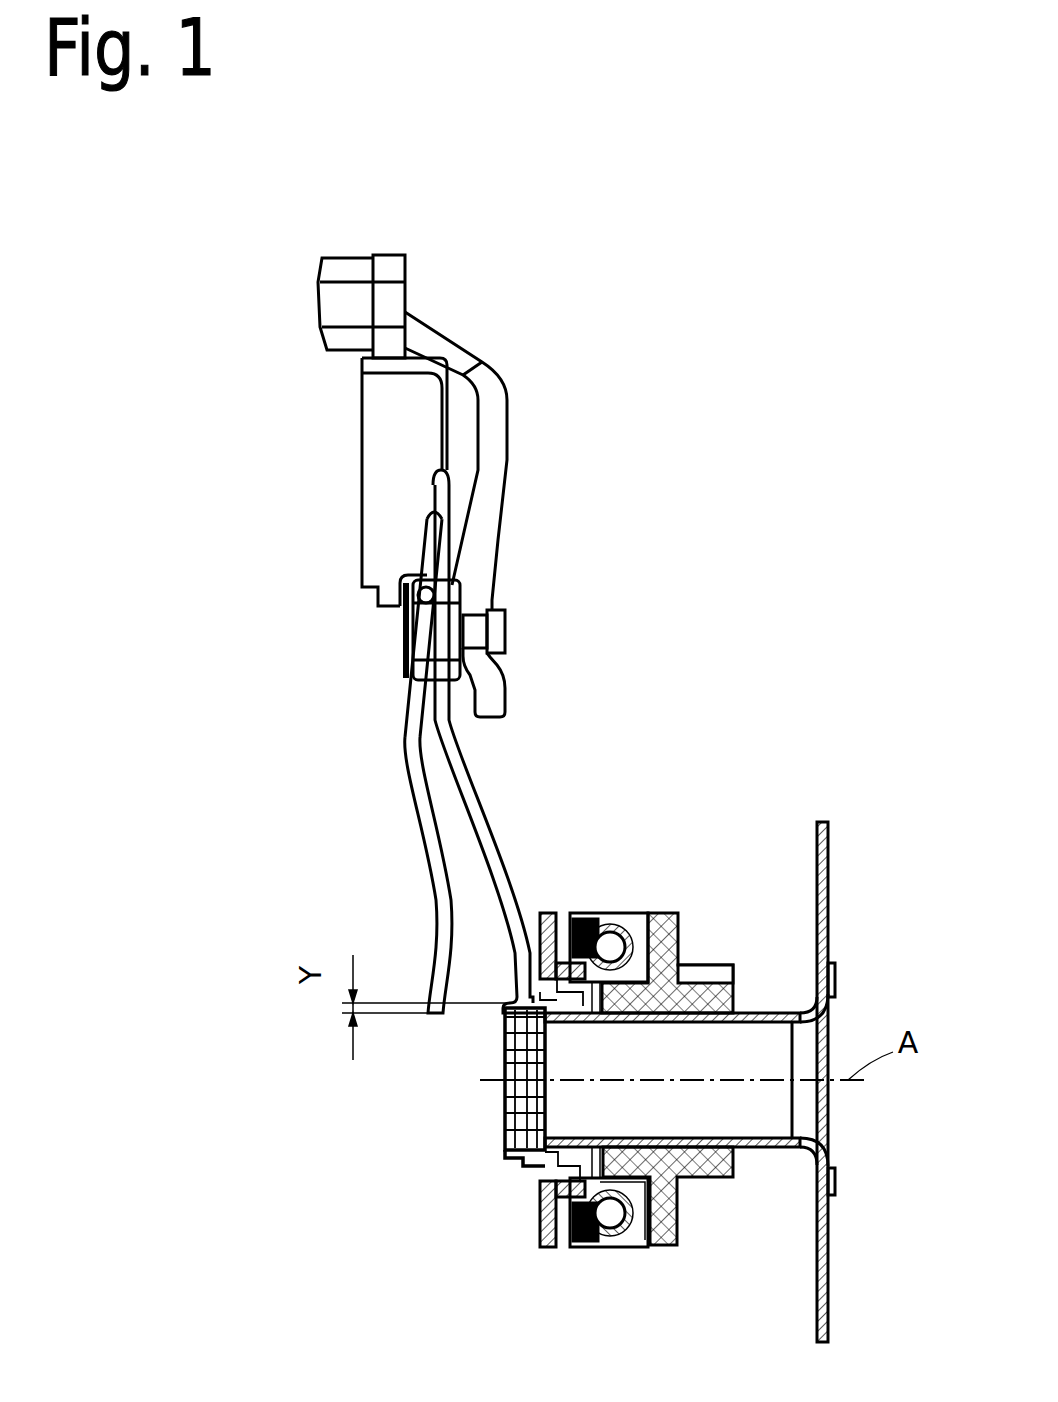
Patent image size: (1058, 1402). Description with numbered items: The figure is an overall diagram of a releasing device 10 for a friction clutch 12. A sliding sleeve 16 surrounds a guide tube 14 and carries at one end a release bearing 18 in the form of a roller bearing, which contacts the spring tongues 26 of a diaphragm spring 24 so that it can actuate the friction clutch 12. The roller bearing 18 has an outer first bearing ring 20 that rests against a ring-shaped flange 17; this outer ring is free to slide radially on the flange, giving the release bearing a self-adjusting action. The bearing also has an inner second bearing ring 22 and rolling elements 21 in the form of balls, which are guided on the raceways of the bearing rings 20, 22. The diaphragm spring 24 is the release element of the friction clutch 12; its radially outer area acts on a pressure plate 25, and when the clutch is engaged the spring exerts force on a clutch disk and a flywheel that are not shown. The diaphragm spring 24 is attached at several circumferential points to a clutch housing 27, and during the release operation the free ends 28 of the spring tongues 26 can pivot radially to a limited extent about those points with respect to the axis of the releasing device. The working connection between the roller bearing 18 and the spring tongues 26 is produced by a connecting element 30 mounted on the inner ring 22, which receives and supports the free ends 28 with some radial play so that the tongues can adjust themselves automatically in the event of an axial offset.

The releasing device 10 is at (706, 808).
The friction clutch 12 is at (338, 477).
The guide tube 14 is at (712, 1025).
The sliding sleeve 16 is at (712, 1177).
The ring-shaped flange 17 is at (662, 913).
The release bearing 18 is at (646, 1275).
The first bearing ring 20 is at (647, 1247).
The rolling elements 21 is at (593, 913).
The second bearing ring 22 is at (553, 1249).
The diaphragm spring 24 is at (380, 779).
The pressure plate 25 is at (421, 452).
The spring tongues 26 is at (475, 810).
The clutch housing 27 is at (510, 447).
The free ends 28 is at (435, 1017).
The connecting element 30 is at (512, 1170).